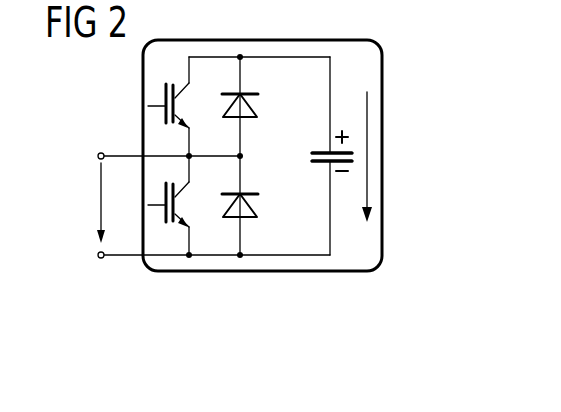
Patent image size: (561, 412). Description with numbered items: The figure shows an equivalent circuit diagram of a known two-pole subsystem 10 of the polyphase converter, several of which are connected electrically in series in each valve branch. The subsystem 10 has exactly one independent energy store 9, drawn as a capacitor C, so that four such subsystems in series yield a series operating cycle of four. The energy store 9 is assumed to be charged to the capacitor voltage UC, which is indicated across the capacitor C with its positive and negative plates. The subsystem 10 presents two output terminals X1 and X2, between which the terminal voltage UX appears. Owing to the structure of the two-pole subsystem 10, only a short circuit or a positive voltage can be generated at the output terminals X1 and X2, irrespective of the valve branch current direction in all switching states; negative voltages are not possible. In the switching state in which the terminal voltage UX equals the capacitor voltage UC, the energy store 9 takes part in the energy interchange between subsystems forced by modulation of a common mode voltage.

The two-pole subsystem 10 is at (383, 86).
The independent energy store 9 is at (318, 166).
The capacitor C is at (324, 155).
The output terminal X1 is at (87, 255).
The output terminal X2 is at (87, 156).
The terminal voltage UX is at (114, 203).
The capacitor voltage UC is at (367, 153).